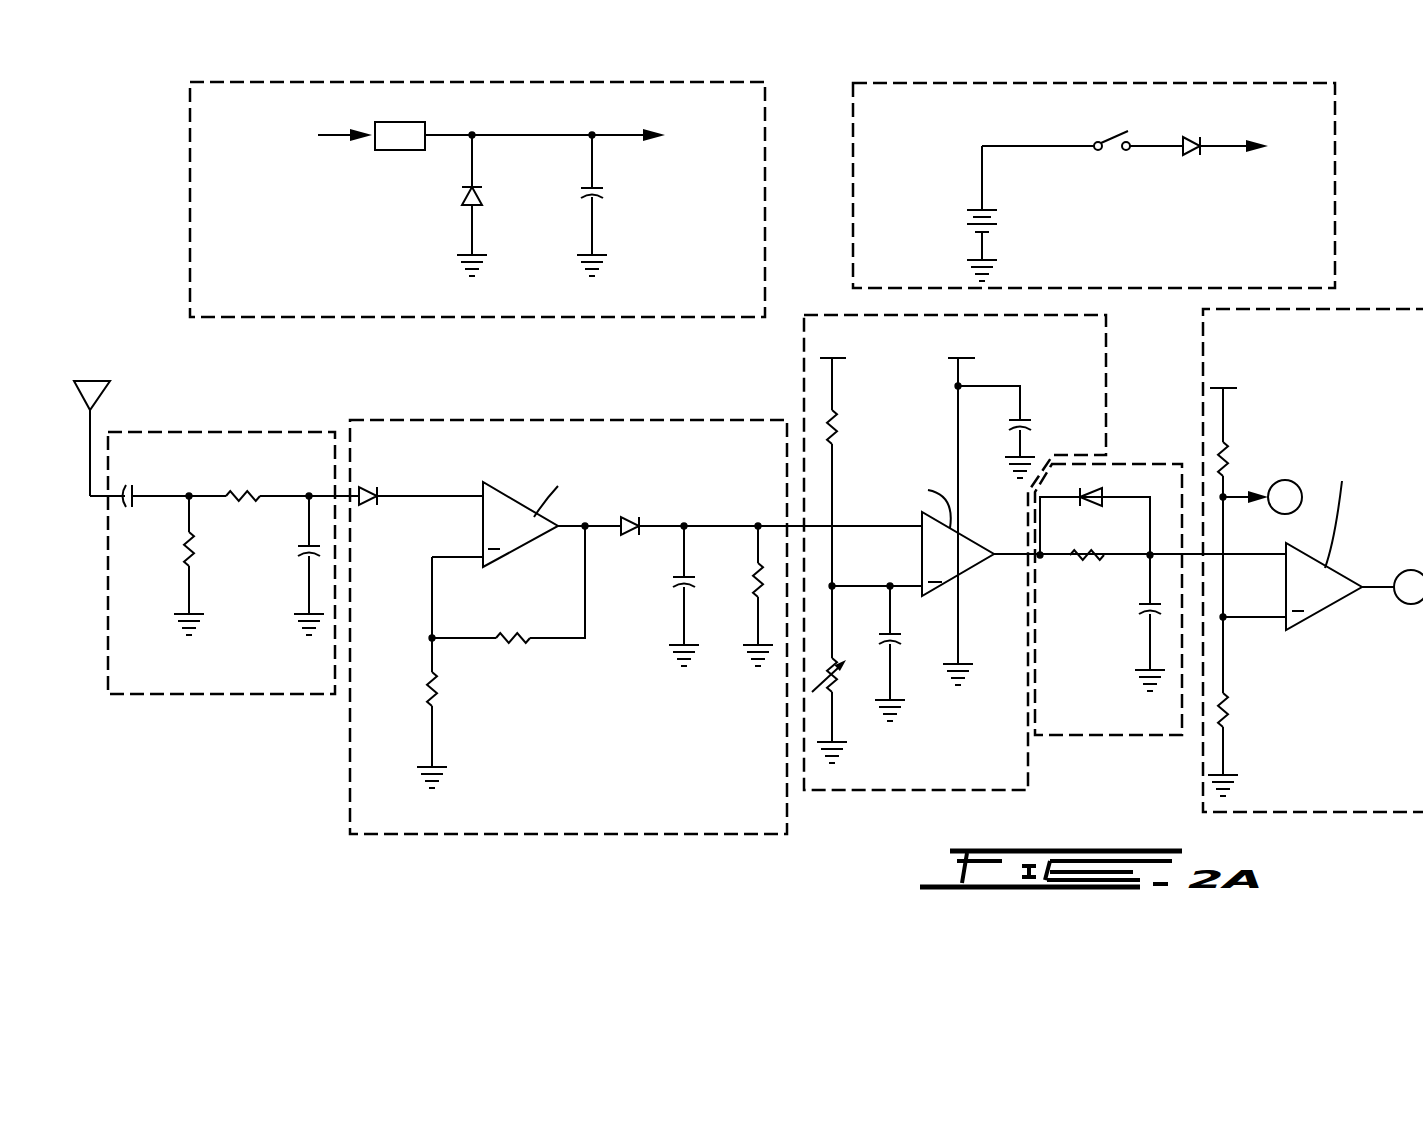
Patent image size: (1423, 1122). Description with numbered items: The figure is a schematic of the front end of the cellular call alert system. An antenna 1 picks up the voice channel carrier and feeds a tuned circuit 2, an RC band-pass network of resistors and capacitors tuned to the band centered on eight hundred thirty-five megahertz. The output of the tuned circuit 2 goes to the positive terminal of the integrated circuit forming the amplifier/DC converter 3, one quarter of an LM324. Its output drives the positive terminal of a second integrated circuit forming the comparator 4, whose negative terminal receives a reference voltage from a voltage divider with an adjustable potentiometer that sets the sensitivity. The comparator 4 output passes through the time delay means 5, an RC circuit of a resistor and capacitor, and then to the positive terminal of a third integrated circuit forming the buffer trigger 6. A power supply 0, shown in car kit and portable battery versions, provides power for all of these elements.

The power supply 0 is at (190, 218).
The antenna 1 is at (80, 407).
The tuned circuit 2 is at (173, 697).
The amplifier/DC converter 3 is at (350, 760).
The comparator 4 is at (890, 790).
The time delay means 5 is at (1101, 737).
The buffer trigger 6 is at (1230, 811).